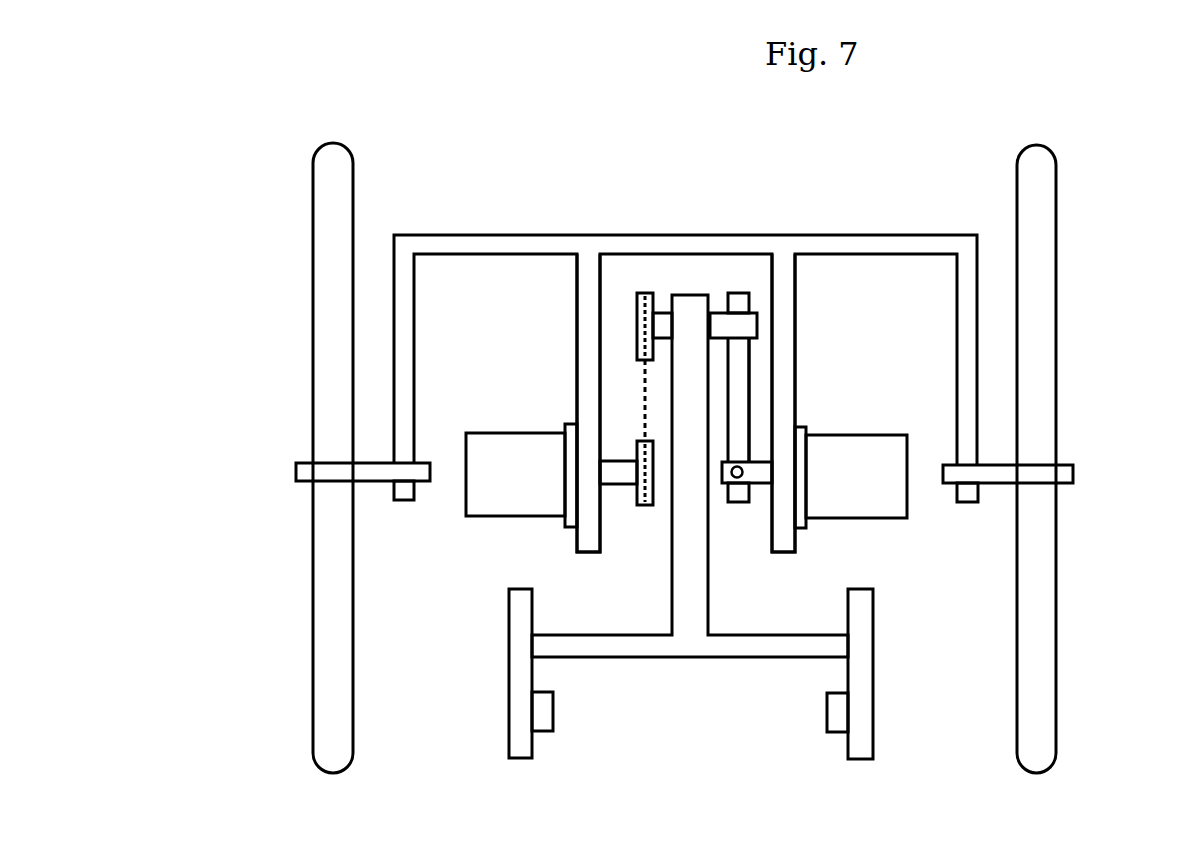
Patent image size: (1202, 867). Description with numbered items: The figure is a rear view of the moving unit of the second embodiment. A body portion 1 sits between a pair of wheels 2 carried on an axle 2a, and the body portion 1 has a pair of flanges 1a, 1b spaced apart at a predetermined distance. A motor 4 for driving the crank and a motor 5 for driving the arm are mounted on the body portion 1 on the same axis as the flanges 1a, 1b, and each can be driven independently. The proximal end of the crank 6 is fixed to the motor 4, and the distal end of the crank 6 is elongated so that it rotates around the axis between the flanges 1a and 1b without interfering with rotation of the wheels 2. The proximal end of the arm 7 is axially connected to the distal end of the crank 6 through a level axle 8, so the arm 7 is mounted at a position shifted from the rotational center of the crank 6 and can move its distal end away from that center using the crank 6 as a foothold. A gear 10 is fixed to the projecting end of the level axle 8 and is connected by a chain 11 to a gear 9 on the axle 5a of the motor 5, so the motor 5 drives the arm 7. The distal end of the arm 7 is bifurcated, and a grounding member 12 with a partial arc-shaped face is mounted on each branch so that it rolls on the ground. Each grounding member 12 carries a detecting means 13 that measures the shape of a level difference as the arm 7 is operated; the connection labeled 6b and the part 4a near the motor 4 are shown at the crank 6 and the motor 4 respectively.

The body portion 1 is at (626, 214).
The flange 1a is at (785, 553).
The flange 1b is at (577, 541).
The wheels 2 is at (313, 201).
The axle 2a is at (296, 472).
The motor for driving the crank 4 is at (860, 435).
The motor output shaft bearing 4a is at (747, 487).
The motor for driving the arm 5 is at (490, 433).
The axle of the motor 5a is at (627, 485).
The crank 6 is at (749, 386).
The drive shaft coupling 6b is at (764, 446).
The arm 7 is at (690, 295).
The level axle 8 is at (757, 325).
The gear 9 is at (652, 506).
The gear 10 is at (637, 309).
The chain 11 is at (643, 398).
The grounding member 12 is at (509, 611).
The detecting means 13 is at (563, 740).